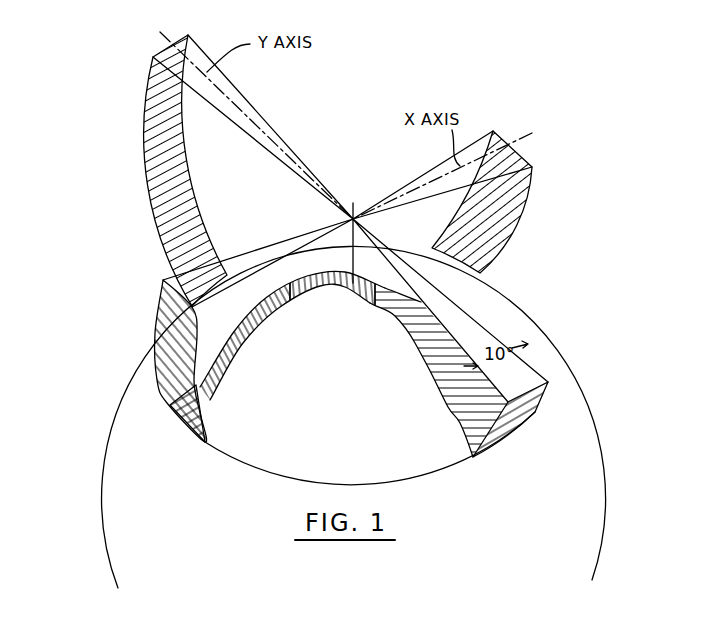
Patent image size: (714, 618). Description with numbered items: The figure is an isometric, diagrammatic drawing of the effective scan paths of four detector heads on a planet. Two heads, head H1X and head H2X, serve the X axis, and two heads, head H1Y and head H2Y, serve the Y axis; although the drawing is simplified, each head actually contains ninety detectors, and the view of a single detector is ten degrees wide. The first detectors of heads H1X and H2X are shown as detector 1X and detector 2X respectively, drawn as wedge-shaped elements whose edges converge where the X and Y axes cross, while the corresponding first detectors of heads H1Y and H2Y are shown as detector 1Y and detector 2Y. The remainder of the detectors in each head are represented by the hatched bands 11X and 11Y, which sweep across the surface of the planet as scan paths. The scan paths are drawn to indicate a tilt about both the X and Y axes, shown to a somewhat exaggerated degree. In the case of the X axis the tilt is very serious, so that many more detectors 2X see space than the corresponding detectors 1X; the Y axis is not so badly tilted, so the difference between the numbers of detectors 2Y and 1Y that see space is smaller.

The first detector of head H2X 2X is at (146, 90).
The first detector of head H2Y 2Y is at (521, 214).
The first detector of head H1X 1X is at (537, 420).
The first detector of head H1Y 1Y is at (151, 317).
The remaining detectors of the X axis heads 11X is at (400, 336).
The remaining detectors of the Y axis heads 11Y is at (250, 332).
The head H2X is at (263, 198).
The head H2Y is at (437, 227).
The head H1X is at (489, 342).
The head H1Y is at (246, 331).